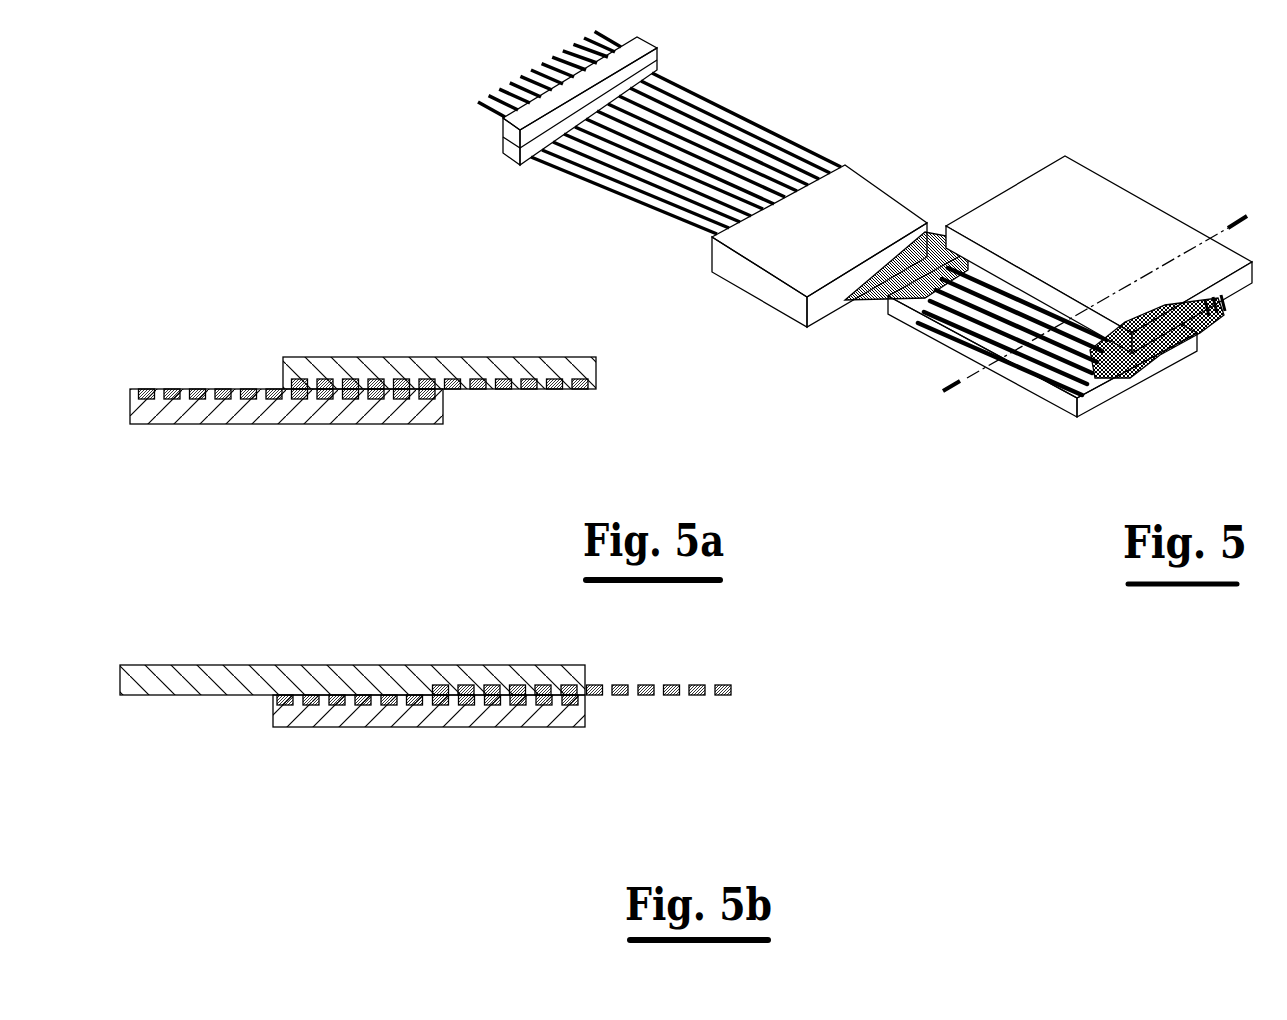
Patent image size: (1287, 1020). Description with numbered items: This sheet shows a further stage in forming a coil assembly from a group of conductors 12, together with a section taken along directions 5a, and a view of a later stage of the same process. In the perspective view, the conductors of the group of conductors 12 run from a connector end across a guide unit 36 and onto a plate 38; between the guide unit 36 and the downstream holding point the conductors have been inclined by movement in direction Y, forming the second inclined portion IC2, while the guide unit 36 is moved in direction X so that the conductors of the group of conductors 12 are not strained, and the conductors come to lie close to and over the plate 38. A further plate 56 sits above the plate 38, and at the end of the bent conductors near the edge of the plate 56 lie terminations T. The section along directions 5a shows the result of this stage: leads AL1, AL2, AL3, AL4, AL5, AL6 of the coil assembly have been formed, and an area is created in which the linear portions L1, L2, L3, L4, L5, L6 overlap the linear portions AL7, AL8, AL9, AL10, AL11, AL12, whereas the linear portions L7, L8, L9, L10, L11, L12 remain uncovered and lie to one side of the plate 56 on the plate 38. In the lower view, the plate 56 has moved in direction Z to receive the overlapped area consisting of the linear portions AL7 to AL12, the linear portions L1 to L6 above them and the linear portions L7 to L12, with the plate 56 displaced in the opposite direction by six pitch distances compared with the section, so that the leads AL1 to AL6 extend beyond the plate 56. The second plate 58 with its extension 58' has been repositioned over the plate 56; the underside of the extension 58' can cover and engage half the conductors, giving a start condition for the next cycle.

In FIG. 5, the group of conductors 12 is at (588, 195).
In FIG. 5, the guide unit 36 is at (710, 303).
In FIG. 5, the plate 38 is at (1044, 395).
In FIG. 5a, the plate 38 is at (230, 422).
In FIG. 5, the plate 56 is at (1040, 208).
In FIG. 5a, the plate 56 is at (495, 362).
In FIG. 5b, the plate 56 is at (268, 712).
In FIG. 5b, the second plate 58 is at (352, 648).
In FIG. 5b, the extension 58' is at (555, 641).
In FIG. 5, the second inclined portion IC2 is at (865, 310).
In FIG. 5, the terminals T is at (1213, 327).
In FIG. 5, the directions 5a- 5a is at (963, 392).
In FIG. 5a, the linear portion L1 is at (400, 274).
In FIG. 5b, the linear portion L1 is at (496, 615).
In FIG. 5a, the linear portion L2 is at (388, 285).
In FIG. 5b, the linear portion L2 is at (483, 626).
In FIG. 5a, the linear portion L3 is at (375, 297).
In FIG. 5b, the linear portion L3 is at (470, 637).
In FIG. 5a, the linear portion L4 is at (364, 308).
In FIG. 5b, the linear portion L4 is at (502, 655).
In FIG. 5a, the linear portion L5 is at (351, 318).
In FIG. 5b, the linear portion L5 is at (445, 658).
In FIG. 5a, the linear portion L6 is at (368, 347).
In FIG. 5b, the linear portion L6 is at (432, 669).
In FIG. 5, the linear portion L7 is at (955, 325).
In FIG. 5a, the linear portion L7 is at (273, 389).
In FIG. 5b, the linear portion L7 is at (417, 705).
In FIG. 5, the linear portion L8 is at (901, 448).
In FIG. 5a, the linear portion L8 is at (248, 389).
In FIG. 5b, the linear portion L8 is at (390, 703).
In FIG. 5, the linear portion L9 is at (901, 469).
In FIG. 5a, the linear portion L9 is at (222, 389).
In FIG. 5b, the linear portion L9 is at (367, 703).
In FIG. 5, the linear portion L10 is at (907, 492).
In FIG. 5a, the linear portion L10 is at (196, 389).
In FIG. 5b, the linear portion L10 is at (342, 703).
In FIG. 5, the linear portion L11 is at (907, 513).
In FIG. 5a, the linear portion L11 is at (168, 389).
In FIG. 5b, the linear portion L11 is at (313, 703).
In FIG. 5, the linear portion L12 is at (907, 535).
In FIG. 5a, the linear portion L12 is at (143, 389).
In FIG. 5b, the linear portion L12 is at (285, 704).
In FIG. 5a, the lead AL1 is at (580, 390).
In FIG. 5b, the lead AL1 is at (723, 695).
In FIG. 5a, the lead AL2 is at (555, 390).
In FIG. 5b, the lead AL2 is at (698, 695).
In FIG. 5a, the lead AL3 is at (530, 390).
In FIG. 5b, the lead AL3 is at (672, 695).
In FIG. 5a, the lead AL4 is at (505, 390).
In FIG. 5b, the lead AL4 is at (647, 695).
In FIG. 5a, the lead AL5 is at (480, 390).
In FIG. 5b, the lead AL5 is at (621, 695).
In FIG. 5a, the lead AL6 is at (455, 390).
In FIG. 5b, the lead AL6 is at (596, 695).
In FIG. 5a, the linear portion AL7 is at (346, 422).
In FIG. 5b, the linear portion AL7 is at (514, 723).
In FIG. 5a, the linear portion AL8 is at (334, 433).
In FIG. 5b, the linear portion AL8 is at (501, 734).
In FIG. 5a, the linear portion AL9 is at (350, 437).
In FIG. 5b, the linear portion AL9 is at (510, 792).
In FIG. 5a, the linear portion AL10 is at (308, 454).
In FIG. 5b, the linear portion AL10 is at (518, 735).
In FIG. 5a, the linear portion AL11 is at (295, 465).
In FIG. 5b, the linear portion AL11 is at (474, 766).
In FIG. 5a, the linear portion AL12 is at (283, 475).
In FIG. 5b, the linear portion AL12 is at (465, 777).